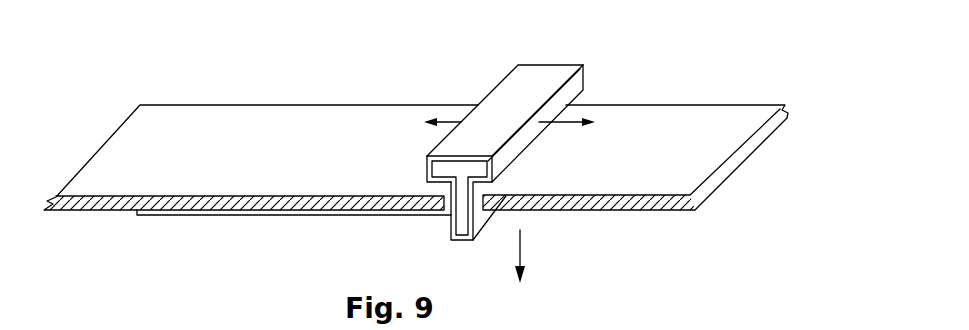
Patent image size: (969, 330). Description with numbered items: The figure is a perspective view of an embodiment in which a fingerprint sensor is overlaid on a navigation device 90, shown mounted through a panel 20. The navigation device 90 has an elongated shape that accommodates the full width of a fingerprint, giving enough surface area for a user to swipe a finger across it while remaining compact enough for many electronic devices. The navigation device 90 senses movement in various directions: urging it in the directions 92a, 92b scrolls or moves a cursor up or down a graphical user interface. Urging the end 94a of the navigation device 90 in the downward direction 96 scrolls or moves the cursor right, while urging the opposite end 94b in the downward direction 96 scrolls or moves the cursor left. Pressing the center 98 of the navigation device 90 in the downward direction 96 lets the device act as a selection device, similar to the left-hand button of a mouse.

The panel assembly 20 is at (317, 242).
The navigation device 90 is at (481, 171).
The center of the navigation device 98 is at (502, 115).
The end of the navigation device 94a is at (440, 156).
The opposite end of the navigation device 94b is at (550, 65).
The direction 92a is at (562, 124).
The direction 92b is at (448, 125).
The downward direction 96 is at (521, 250).